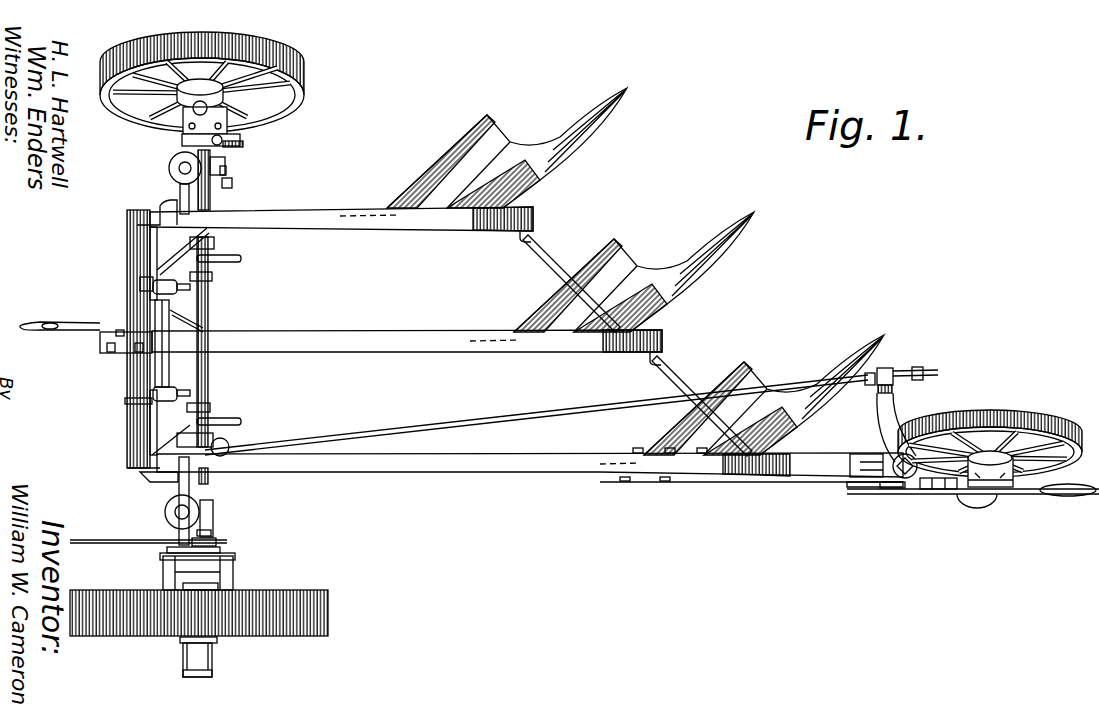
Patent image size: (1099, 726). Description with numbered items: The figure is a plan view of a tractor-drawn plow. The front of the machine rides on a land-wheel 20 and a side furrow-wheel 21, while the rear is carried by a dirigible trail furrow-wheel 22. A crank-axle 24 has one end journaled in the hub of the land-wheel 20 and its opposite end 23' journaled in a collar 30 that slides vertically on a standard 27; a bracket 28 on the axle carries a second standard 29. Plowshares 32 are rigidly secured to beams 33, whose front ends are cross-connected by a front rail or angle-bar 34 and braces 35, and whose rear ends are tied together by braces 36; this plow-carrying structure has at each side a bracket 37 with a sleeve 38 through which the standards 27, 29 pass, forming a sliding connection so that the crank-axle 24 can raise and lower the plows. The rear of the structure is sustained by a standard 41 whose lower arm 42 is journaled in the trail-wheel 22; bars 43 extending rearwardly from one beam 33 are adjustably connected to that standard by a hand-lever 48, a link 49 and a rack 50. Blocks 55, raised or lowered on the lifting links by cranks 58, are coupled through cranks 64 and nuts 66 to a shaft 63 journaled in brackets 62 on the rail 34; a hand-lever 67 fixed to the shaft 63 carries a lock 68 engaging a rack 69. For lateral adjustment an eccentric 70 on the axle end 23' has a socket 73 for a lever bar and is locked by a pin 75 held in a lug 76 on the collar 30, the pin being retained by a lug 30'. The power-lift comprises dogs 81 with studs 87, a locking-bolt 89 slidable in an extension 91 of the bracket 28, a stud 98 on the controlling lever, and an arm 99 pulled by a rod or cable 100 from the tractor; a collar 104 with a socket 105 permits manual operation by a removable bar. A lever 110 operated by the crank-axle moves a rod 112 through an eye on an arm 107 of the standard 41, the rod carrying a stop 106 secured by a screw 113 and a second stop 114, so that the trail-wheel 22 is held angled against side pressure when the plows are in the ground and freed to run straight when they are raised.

The land-wheel 20 is at (329, 611).
The side furrow-wheel 21 is at (304, 58).
The rear or trail furrow-wheel 22 is at (1036, 421).
The end of crank-axle 23' is at (226, 180).
The crank-axle 24 is at (209, 387).
The standard 27 is at (168, 168).
The bracket 28 is at (213, 519).
The standard 29 is at (170, 512).
The collar 30 is at (153, 197).
The lug 30' is at (264, 191).
The plowshares 32 is at (560, 158).
The beams 33 is at (535, 213).
The front rail or angle-bar 34 is at (128, 403).
The braces 35 is at (150, 250).
The braces 36 is at (557, 274).
The bracket 37 is at (147, 206).
The sleeve or guide 38 is at (180, 155).
The standard 41 is at (904, 478).
The arm 42 is at (975, 506).
The bars 43 is at (807, 458).
The hand-lever 48 is at (1018, 495).
The link 49 is at (888, 488).
The rack 50 is at (931, 490).
The block 55 is at (215, 243).
The crank 58 is at (243, 259).
The brackets 62 is at (153, 286).
The shaft 63 is at (162, 367).
The cranks 64 is at (186, 289).
The nuts 66 is at (212, 277).
The hand-lever 67 is at (82, 325).
The lock 68 is at (140, 333).
The rack 69 is at (205, 329).
The eccentric 70 is at (245, 146).
The socket 73 is at (224, 139).
The pin 75 is at (226, 162).
The lug 76 is at (227, 171).
The dogs 81 is at (205, 590).
The stud 87 is at (175, 560).
The locking-bolt 89 is at (213, 533).
The extension 91 is at (217, 543).
The stud 98 is at (165, 562).
The arm 99 is at (167, 550).
The rod or cable 100 is at (92, 536).
The collar 104 is at (213, 652).
The socket 105 is at (198, 677).
The stop 106 is at (886, 368).
The arm 107 is at (894, 409).
The lever 110 is at (152, 474).
The rod 112 is at (503, 418).
The screw 113 is at (866, 385).
The stop 114 is at (923, 367).